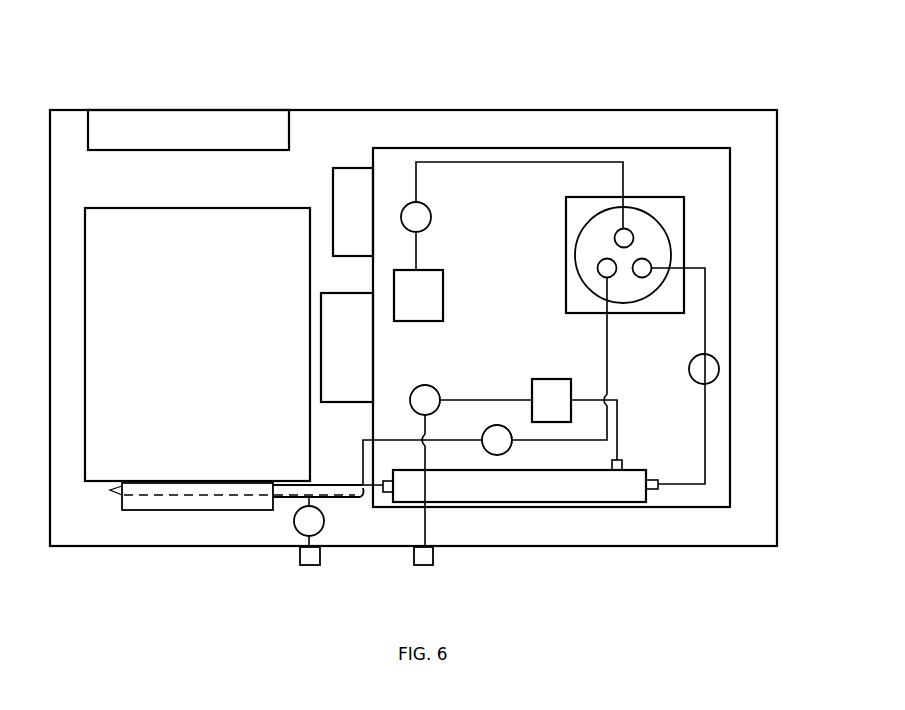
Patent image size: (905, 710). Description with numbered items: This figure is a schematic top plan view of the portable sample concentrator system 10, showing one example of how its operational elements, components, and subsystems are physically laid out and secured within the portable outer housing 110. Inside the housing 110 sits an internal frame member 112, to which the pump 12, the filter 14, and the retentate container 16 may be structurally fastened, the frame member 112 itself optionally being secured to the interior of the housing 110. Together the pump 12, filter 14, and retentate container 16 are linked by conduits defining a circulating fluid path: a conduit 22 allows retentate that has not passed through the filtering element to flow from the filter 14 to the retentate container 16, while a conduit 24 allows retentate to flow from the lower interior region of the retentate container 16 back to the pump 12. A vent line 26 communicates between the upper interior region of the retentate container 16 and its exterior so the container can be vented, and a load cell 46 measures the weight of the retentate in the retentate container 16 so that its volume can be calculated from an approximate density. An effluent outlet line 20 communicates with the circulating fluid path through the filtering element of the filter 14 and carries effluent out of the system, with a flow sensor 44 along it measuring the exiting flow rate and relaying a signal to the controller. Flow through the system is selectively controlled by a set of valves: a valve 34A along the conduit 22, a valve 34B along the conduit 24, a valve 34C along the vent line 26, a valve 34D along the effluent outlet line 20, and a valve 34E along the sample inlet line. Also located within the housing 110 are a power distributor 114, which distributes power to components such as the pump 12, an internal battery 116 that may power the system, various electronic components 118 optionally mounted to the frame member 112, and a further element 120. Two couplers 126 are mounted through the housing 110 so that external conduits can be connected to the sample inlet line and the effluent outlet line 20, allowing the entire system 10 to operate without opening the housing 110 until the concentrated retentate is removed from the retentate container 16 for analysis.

The sample concentrator system 10 is at (240, 60).
The outer housing 110 is at (102, 548).
The internal frame member 112 is at (667, 147).
The power distributor 114 is at (188, 130).
The internal battery 116 is at (348, 167).
The electronic components 118 is at (347, 347).
The pump 120 is at (432, 294).
The pump 12 is at (197, 344).
The vent line 26 is at (515, 164).
The valve 34C is at (418, 220).
The load cell 46 is at (670, 209).
The retentate container 16 is at (658, 243).
The conduit 22 is at (707, 325).
The valve 34A is at (706, 366).
The conduit 24 is at (608, 356).
The valve 34B is at (503, 445).
The valve 34D is at (427, 395).
The flow sensor 44 is at (553, 390).
The effluent outlet line 20 is at (617, 423).
The filter 14 is at (583, 492).
The valve 34E is at (315, 522).
The coupler 126 is at (298, 555).